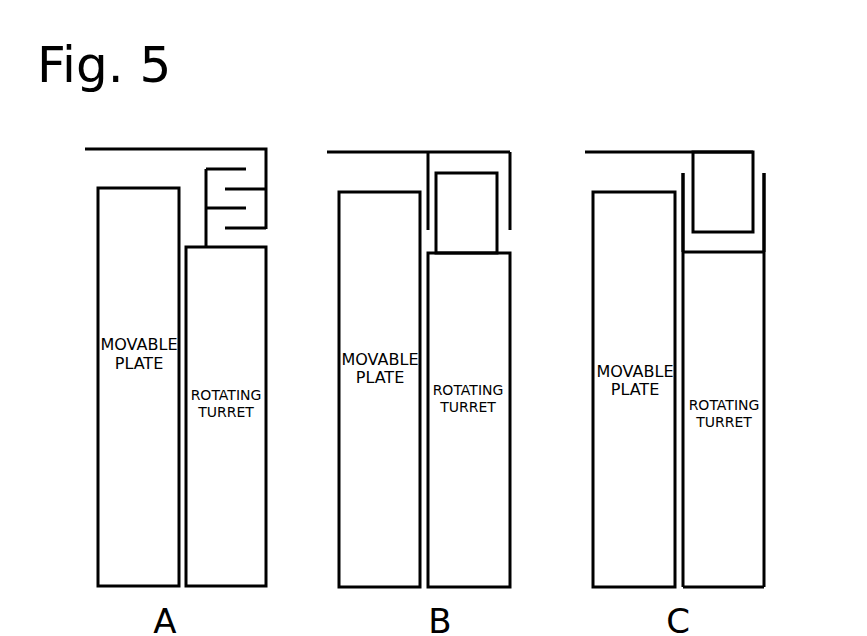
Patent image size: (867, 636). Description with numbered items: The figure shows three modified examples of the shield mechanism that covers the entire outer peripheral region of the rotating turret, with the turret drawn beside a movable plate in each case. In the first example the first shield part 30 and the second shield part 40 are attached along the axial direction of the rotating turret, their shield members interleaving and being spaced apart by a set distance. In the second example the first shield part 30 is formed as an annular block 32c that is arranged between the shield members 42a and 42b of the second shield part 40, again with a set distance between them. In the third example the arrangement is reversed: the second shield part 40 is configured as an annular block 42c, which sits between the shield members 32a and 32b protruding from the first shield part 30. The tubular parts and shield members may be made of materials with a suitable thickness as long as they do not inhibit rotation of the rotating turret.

The second shield part 40 is at (267, 163).
The first shield part 30 is at (206, 225).
The shield member 42a is at (511, 188).
The shield member 42b is at (427, 178).
The annular block 42c is at (718, 162).
The shield member 32a is at (765, 213).
The shield member 32b is at (683, 215).
The annular block 32c is at (473, 229).